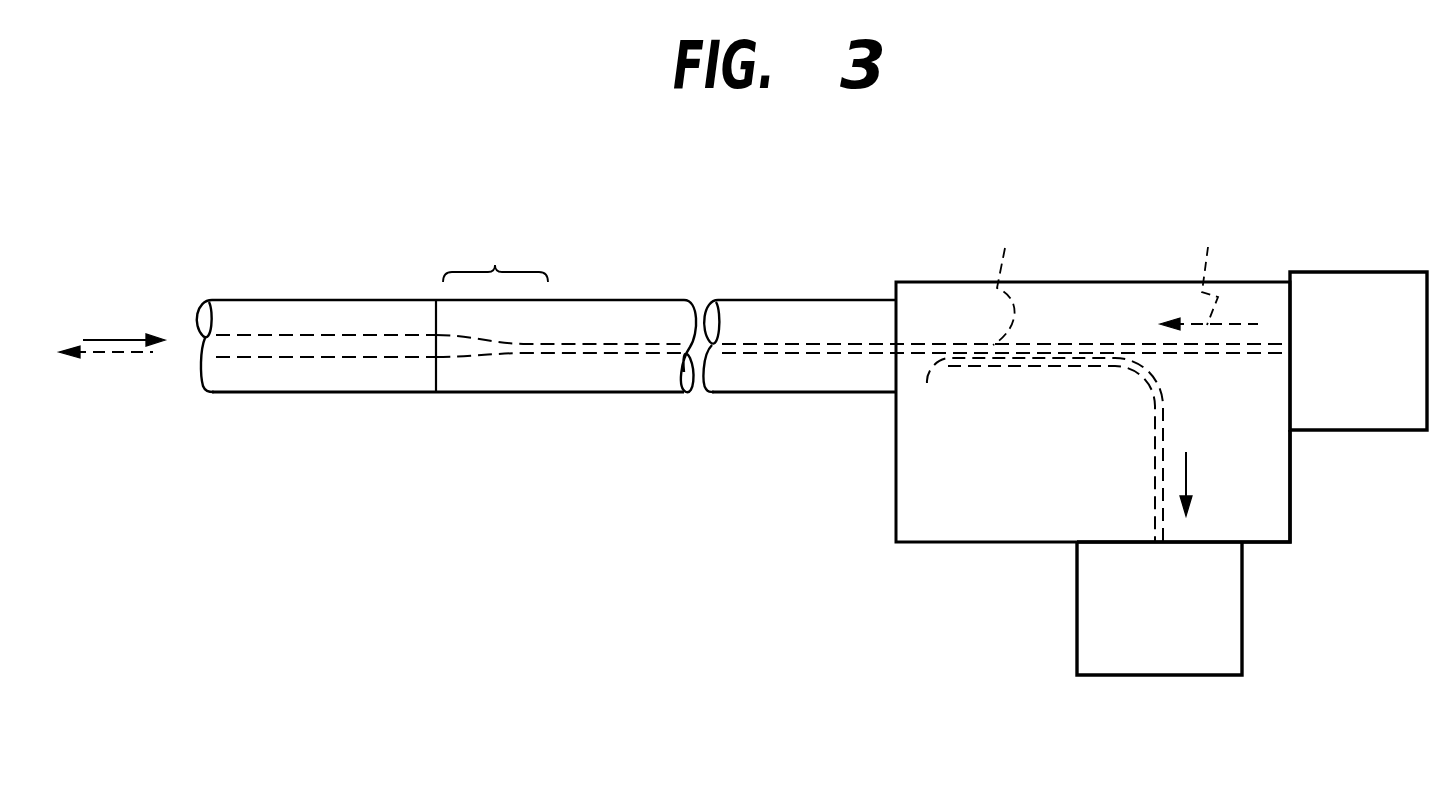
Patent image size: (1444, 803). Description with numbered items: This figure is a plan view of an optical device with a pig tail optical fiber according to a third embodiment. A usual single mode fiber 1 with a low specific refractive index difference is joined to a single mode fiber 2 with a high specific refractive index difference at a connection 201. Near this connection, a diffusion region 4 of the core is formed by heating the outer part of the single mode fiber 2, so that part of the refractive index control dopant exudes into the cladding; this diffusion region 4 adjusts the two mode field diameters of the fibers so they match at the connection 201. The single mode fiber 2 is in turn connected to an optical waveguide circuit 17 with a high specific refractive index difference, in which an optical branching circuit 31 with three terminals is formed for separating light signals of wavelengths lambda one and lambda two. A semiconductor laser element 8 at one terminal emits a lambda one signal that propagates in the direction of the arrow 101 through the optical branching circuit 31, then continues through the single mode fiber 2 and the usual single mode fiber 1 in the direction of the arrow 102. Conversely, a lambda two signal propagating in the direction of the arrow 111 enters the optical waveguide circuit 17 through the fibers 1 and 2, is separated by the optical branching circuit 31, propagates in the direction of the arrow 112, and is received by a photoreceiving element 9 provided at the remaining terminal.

The usual single mode fiber 1 is at (289, 400).
The single mode fiber with a high specific refractive index difference 2 is at (810, 397).
The diffusion region 4 is at (495, 253).
The semiconductor laser element 8 is at (1372, 283).
The photoreceiving element 9 is at (1137, 675).
The optical waveguide circuit 17 is at (950, 284).
The optical branching circuit 31 is at (1006, 280).
The arrow 101 is at (1202, 272).
The arrow 102 is at (93, 358).
The arrow 111 is at (90, 340).
The arrow 112 is at (1187, 480).
The connection 201 is at (437, 372).